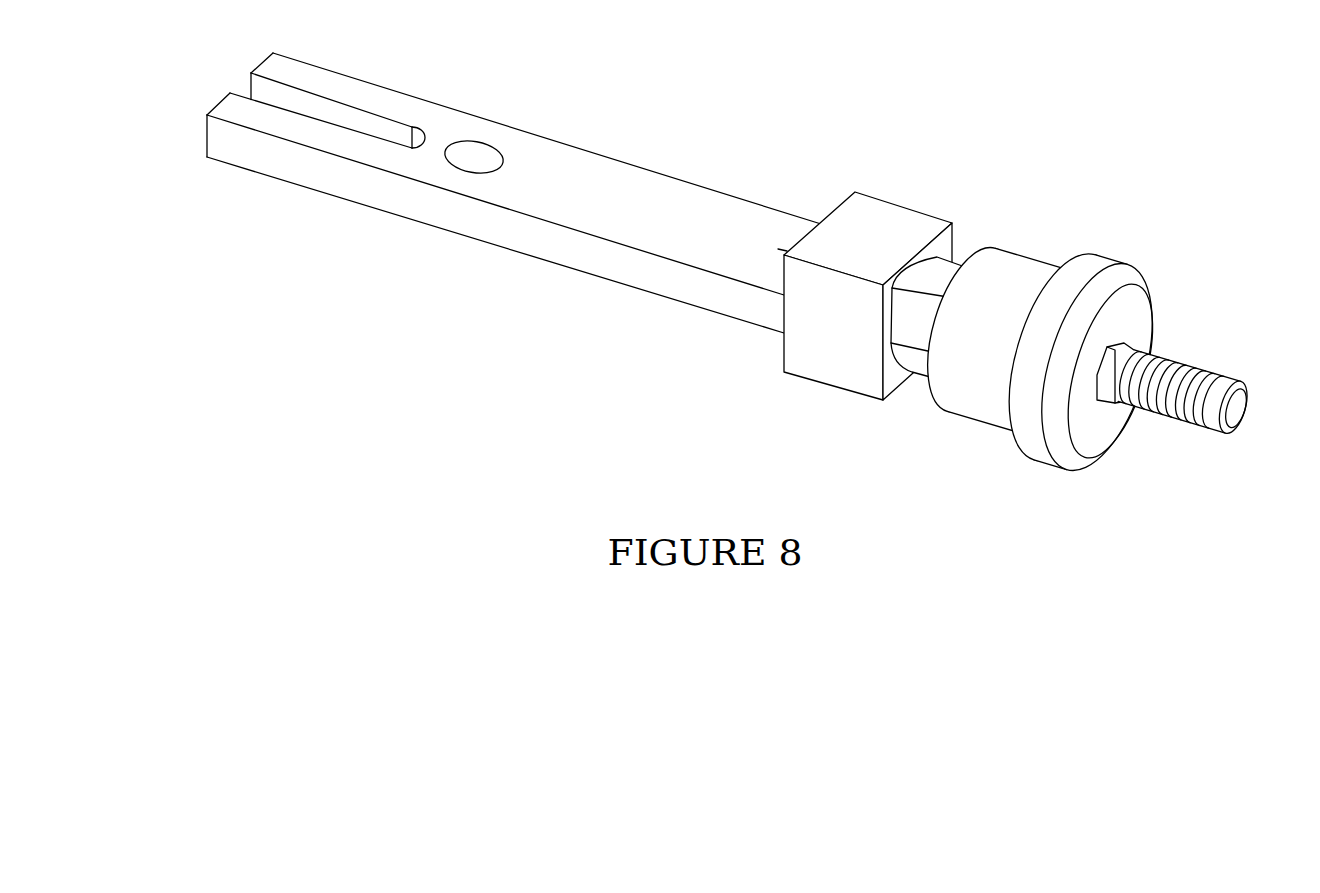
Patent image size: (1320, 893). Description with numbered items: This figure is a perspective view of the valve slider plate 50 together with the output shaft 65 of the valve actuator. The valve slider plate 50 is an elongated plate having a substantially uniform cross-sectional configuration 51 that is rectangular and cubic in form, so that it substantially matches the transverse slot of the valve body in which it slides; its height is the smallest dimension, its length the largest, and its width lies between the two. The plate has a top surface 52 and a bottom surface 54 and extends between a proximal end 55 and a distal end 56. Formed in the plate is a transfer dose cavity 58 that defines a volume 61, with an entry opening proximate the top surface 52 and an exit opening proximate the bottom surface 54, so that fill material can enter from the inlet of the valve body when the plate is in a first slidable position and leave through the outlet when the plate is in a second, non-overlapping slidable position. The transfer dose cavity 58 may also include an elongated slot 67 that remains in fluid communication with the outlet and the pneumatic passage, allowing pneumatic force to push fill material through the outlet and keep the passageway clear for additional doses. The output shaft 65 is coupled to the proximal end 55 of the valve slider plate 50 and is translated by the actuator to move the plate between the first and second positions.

The valve slider plate 50 is at (702, 265).
The cross-sectional configuration 51 is at (192, 136).
The top surface 52 is at (471, 190).
The bottom surface 54 is at (573, 272).
The proximal end 55 is at (953, 233).
The distal end 56 is at (238, 67).
The transfer dose cavity 58 is at (440, 181).
The volume 61 is at (478, 152).
The output shaft 65 is at (1218, 346).
The elongated slot 67 is at (307, 128).